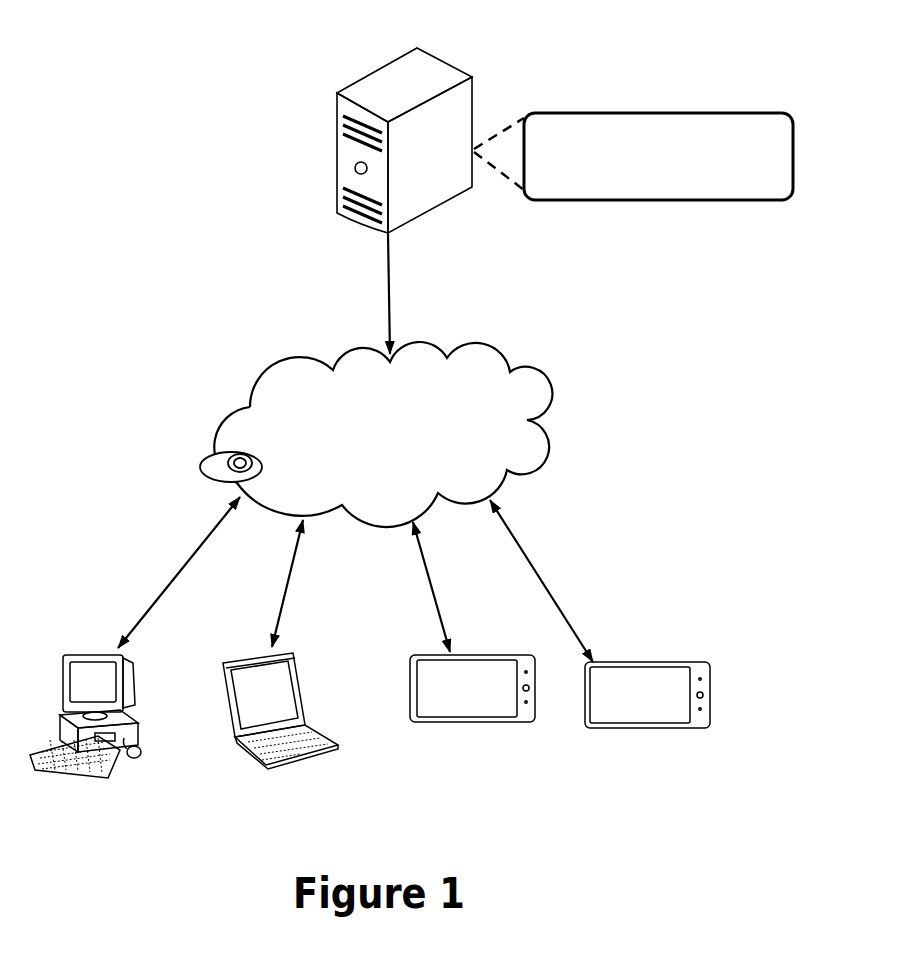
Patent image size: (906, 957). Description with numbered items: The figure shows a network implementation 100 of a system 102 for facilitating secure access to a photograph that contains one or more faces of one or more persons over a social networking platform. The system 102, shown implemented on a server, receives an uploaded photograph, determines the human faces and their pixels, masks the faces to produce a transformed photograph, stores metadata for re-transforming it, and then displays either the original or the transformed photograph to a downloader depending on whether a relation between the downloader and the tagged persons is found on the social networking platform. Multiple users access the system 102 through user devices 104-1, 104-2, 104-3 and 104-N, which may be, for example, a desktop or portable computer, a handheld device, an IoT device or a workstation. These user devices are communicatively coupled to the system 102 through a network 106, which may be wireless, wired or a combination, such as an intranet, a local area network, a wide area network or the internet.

The network implementation 100 is at (141, 135).
The system 102 is at (565, 140).
The user device 104-1 is at (72, 788).
The user device 104-2 is at (307, 762).
The user device 104-3 is at (468, 725).
The user device 104-N is at (643, 727).
The network 106 is at (376, 434).